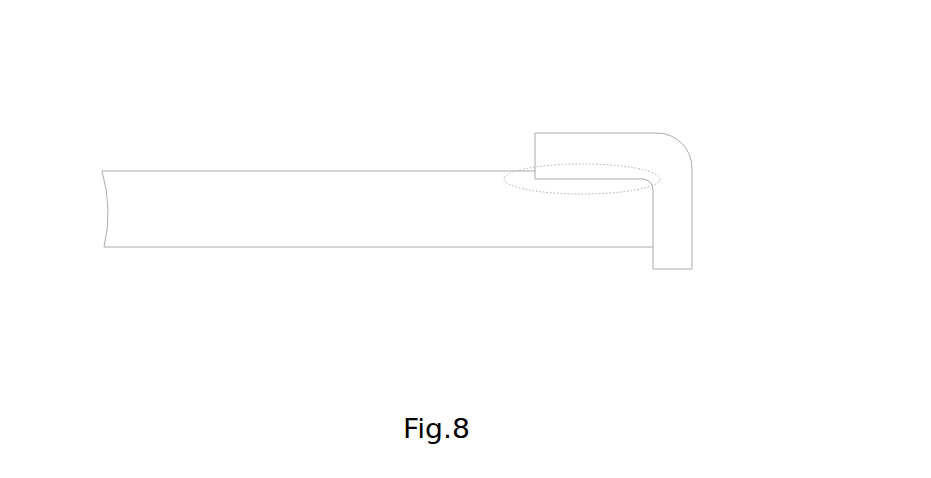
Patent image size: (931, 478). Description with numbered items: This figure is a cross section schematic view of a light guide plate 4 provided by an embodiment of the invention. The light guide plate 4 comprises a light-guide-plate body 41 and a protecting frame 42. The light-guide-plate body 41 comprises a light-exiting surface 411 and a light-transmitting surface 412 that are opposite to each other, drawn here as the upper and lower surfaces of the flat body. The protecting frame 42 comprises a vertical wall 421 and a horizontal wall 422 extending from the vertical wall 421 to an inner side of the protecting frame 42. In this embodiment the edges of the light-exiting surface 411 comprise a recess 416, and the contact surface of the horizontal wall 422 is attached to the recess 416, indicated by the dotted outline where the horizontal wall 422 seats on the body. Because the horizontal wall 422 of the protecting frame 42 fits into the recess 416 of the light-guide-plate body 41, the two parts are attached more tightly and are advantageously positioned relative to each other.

The light guide plate 4 is at (424, 187).
The light-guide-plate body 41 is at (377, 212).
The light-exiting surface 411 is at (308, 172).
The light-transmitting surface 412 is at (305, 247).
The recess 416 is at (570, 195).
The protecting frame 42 is at (641, 179).
The vertical wall 421 is at (680, 233).
The horizontal wall 422 is at (578, 150).